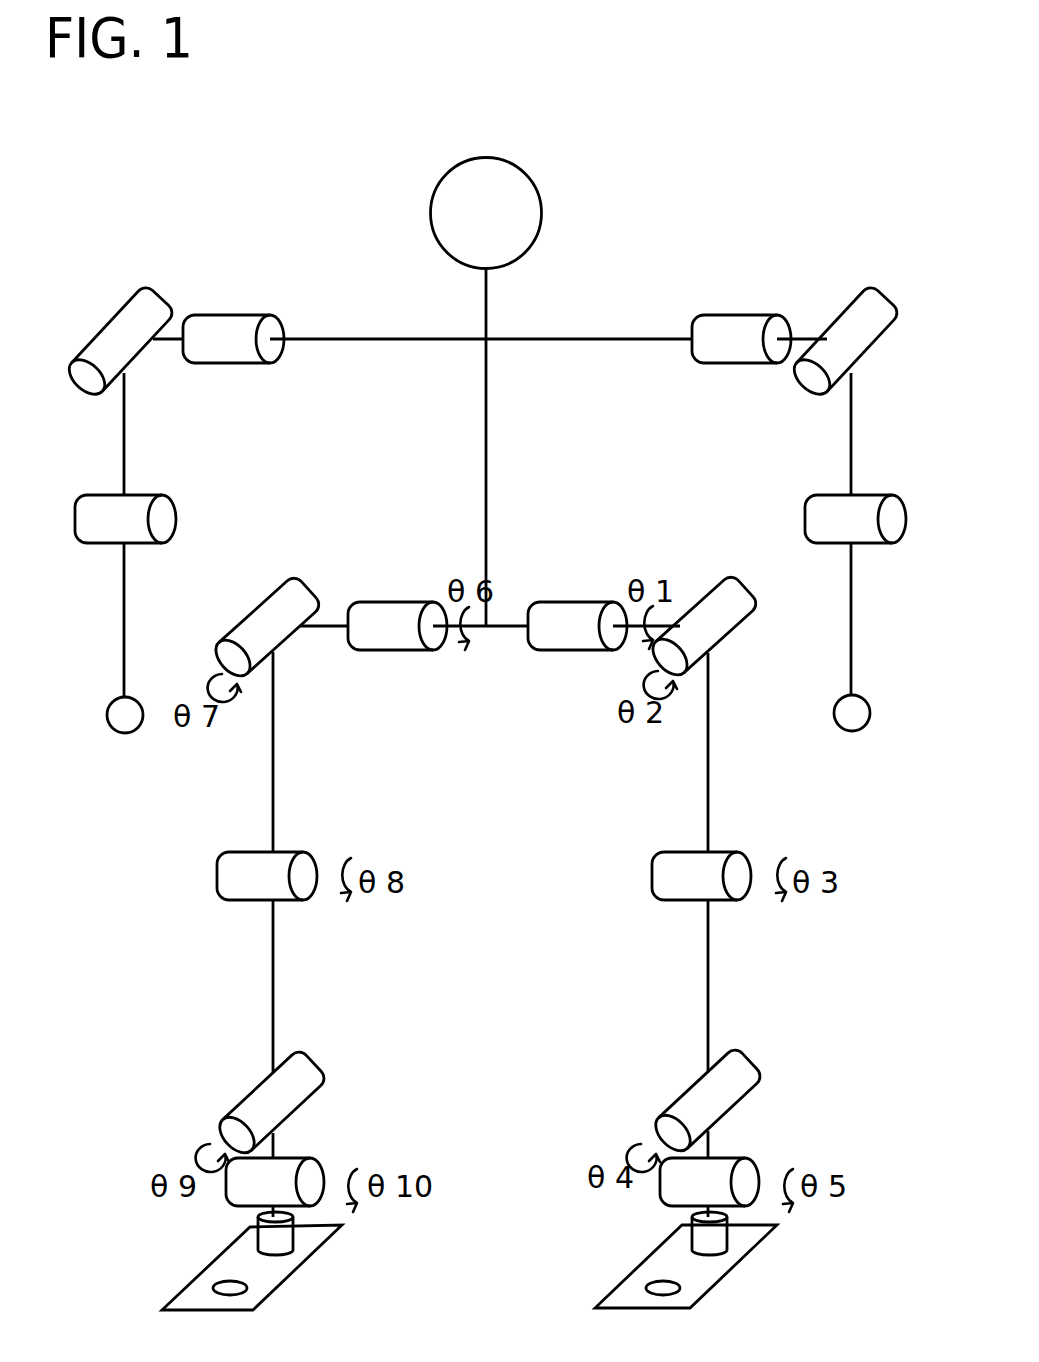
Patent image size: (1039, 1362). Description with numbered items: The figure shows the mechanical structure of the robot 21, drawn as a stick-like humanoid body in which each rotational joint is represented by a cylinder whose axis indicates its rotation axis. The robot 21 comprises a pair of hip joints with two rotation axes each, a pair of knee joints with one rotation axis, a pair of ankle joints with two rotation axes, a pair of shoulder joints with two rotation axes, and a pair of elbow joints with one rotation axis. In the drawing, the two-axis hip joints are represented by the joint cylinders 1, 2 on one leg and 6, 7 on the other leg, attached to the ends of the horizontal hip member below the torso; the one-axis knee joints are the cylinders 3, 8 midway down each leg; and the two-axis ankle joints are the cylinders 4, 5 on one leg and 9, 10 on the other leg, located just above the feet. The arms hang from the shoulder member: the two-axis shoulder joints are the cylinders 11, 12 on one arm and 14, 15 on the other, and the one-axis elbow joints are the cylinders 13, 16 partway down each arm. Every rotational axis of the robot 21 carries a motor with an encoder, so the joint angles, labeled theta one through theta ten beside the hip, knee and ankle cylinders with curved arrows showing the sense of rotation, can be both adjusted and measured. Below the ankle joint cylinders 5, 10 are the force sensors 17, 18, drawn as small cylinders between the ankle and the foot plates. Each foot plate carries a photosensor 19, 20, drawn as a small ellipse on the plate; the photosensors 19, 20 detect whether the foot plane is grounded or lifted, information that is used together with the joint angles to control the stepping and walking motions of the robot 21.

The right hip yaw joint 1 is at (577, 626).
The right hip roll joint 2 is at (703, 627).
The right knee pitch joint 3 is at (701, 876).
The right ankle pitch joint 4 is at (706, 1101).
The right ankle roll joint 5 is at (709, 1182).
The left hip yaw joint 6 is at (397, 626).
The left hip roll joint 7 is at (266, 628).
The left knee pitch joint 8 is at (267, 876).
The left ankle pitch joint 9 is at (270, 1103).
The left ankle roll joint 10 is at (275, 1182).
The right shoulder pitch joint 11 is at (741, 339).
The right shoulder roll joint 12 is at (844, 342).
The right elbow joint 13 is at (855, 519).
The left shoulder pitch joint 14 is at (233, 339).
The left shoulder roll joint 15 is at (119, 342).
The left elbow joint 16 is at (125, 519).
The force sensor 17 is at (709, 1243).
The force sensor 18 is at (276, 1243).
The photosensor 19 is at (680, 1290).
The photosensor 20 is at (247, 1290).
The robot 21 is at (925, 169).